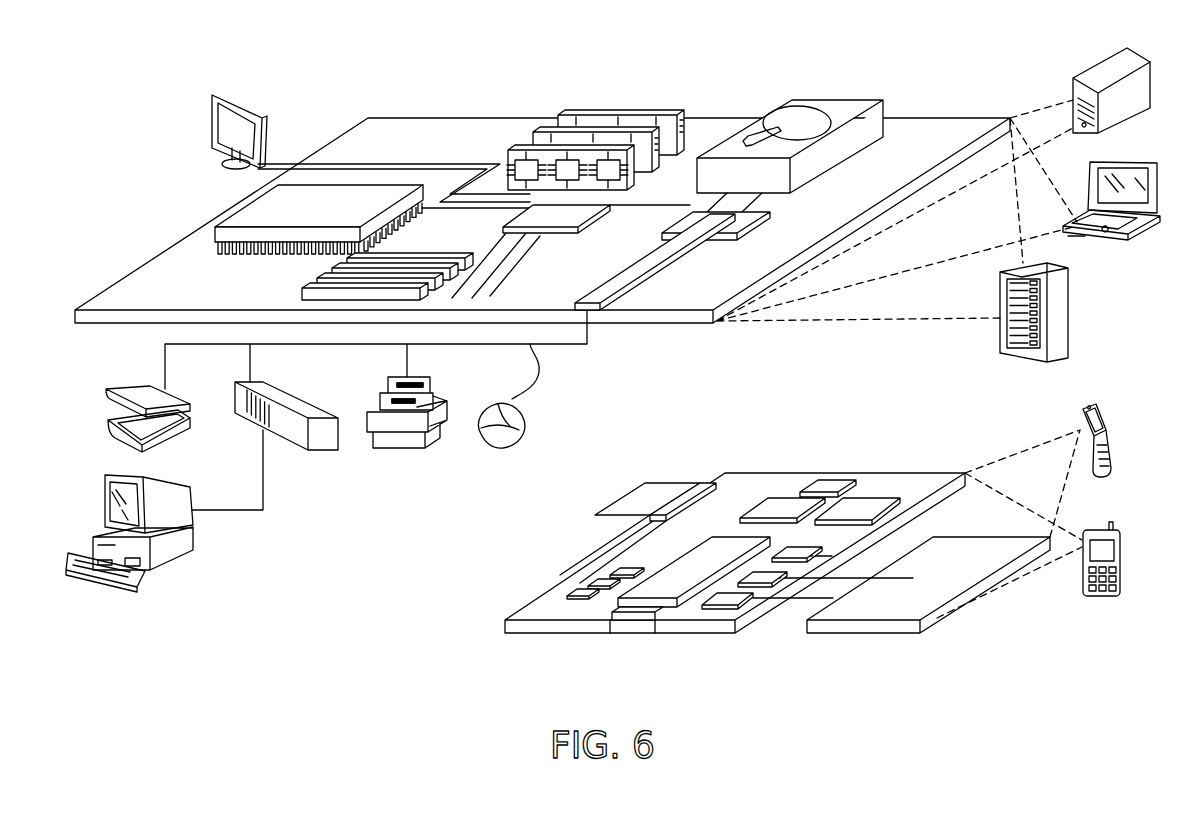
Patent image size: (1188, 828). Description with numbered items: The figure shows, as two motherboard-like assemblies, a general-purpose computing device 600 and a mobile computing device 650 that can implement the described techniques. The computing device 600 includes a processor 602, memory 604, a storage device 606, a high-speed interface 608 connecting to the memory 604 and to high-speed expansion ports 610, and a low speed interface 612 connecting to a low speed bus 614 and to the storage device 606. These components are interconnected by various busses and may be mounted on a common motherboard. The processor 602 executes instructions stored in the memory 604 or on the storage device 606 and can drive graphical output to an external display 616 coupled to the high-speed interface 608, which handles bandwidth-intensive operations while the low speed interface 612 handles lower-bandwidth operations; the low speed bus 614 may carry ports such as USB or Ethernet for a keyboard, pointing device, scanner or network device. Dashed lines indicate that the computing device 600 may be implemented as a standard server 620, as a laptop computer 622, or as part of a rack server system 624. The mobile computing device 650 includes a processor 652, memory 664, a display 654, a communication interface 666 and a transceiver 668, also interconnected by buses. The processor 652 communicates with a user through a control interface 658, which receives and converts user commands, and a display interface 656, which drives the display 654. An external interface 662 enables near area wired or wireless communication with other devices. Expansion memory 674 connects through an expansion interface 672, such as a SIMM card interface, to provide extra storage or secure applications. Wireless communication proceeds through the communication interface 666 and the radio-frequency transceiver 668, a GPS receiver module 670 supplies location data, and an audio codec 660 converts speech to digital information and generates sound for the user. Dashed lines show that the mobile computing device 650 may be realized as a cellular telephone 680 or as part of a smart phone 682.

The computing device 600 is at (330, 78).
The processor 602 is at (236, 210).
The memory 604 is at (626, 118).
The storage device 606 is at (823, 98).
The high-speed interface 608 is at (567, 213).
The high-speed expansion ports 610 is at (319, 283).
The low speed interface 612 is at (690, 220).
The low speed bus 614 is at (590, 301).
The display 616 is at (216, 94).
The standard server 620 is at (1086, 73).
The laptop computer 622 is at (1140, 160).
The rack server system 624 is at (1073, 312).
The computing device 650 is at (469, 634).
The processor 652 is at (665, 578).
The display 654 is at (961, 552).
The display interface 656 is at (737, 599).
The control interface 658 is at (768, 574).
The audio codec 660 is at (800, 548).
The external interface 662 is at (633, 622).
The memory 664 is at (594, 581).
The communication interface 666 is at (776, 498).
The transceiver 668 is at (862, 500).
The GPS receiver module 670 is at (822, 480).
The expansion interface 672 is at (716, 483).
The expansion memory 674 is at (645, 483).
The cellular telephone 680 is at (1090, 410).
The smart phone 682 is at (1103, 528).